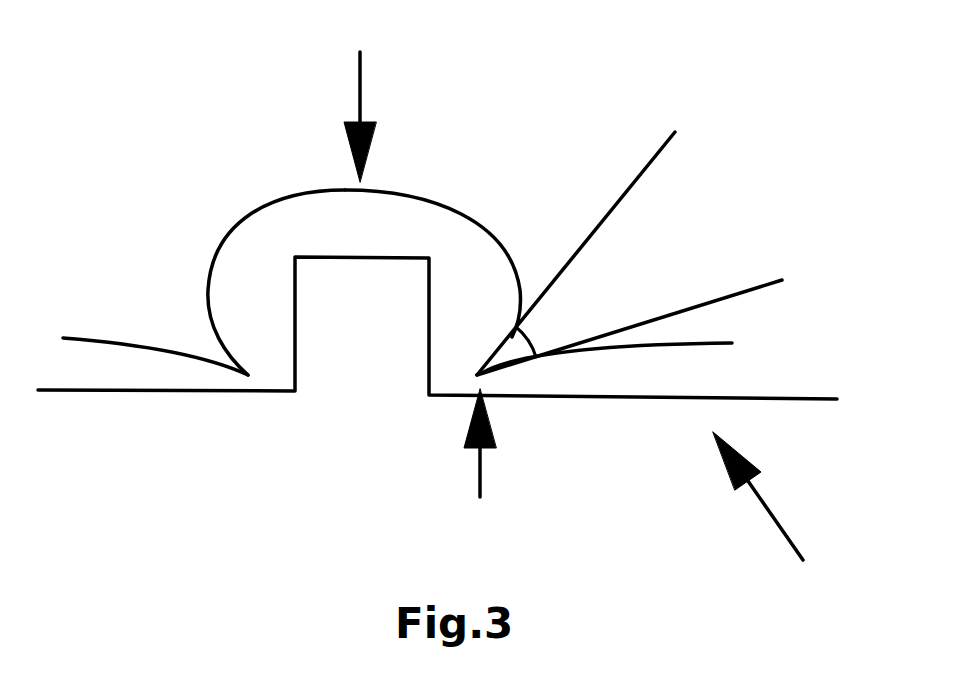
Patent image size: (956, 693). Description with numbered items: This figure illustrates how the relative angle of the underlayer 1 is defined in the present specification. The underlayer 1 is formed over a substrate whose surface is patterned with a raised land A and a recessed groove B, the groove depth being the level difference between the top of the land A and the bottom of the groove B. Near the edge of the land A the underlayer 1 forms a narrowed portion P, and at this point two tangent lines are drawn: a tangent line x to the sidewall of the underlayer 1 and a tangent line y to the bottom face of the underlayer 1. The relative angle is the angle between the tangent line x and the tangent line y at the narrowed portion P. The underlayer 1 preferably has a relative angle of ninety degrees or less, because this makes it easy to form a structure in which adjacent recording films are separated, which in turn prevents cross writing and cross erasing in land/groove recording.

The underlayer 1 is at (242, 263).
The land A is at (360, 91).
The groove B is at (778, 522).
The narrowed portion P is at (480, 476).
The tangent line to the sidewall of the underlayer x is at (622, 197).
The tangent line to the bottom face of the underlayer y is at (752, 290).